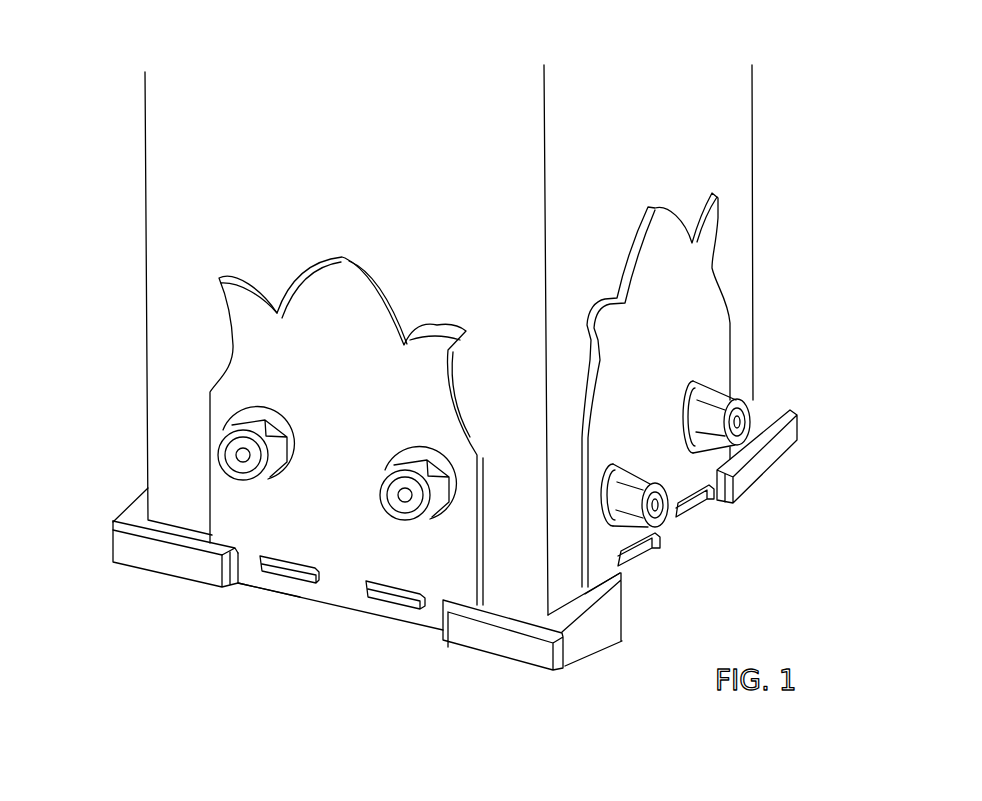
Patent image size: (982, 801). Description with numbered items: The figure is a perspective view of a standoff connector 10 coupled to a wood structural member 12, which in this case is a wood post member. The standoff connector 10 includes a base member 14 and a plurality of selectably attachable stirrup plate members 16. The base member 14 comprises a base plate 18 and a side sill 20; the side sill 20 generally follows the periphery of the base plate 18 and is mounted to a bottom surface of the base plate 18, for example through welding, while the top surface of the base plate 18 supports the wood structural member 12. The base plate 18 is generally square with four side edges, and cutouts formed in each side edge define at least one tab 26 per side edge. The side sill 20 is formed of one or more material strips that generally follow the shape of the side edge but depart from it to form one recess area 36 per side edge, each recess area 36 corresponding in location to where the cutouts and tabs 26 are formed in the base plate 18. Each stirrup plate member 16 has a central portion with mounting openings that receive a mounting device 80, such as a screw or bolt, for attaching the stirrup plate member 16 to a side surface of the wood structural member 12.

The standoff connector 10 is at (453, 455).
The wood structural member 12 is at (653, 132).
The base member 14 is at (182, 594).
The stirrup plate member 16 is at (267, 343).
The base plate 18 is at (137, 517).
The side sill 20 is at (180, 560).
The tab 26 is at (407, 600).
The recess area 36 is at (272, 630).
The mounting device 80 is at (243, 435).